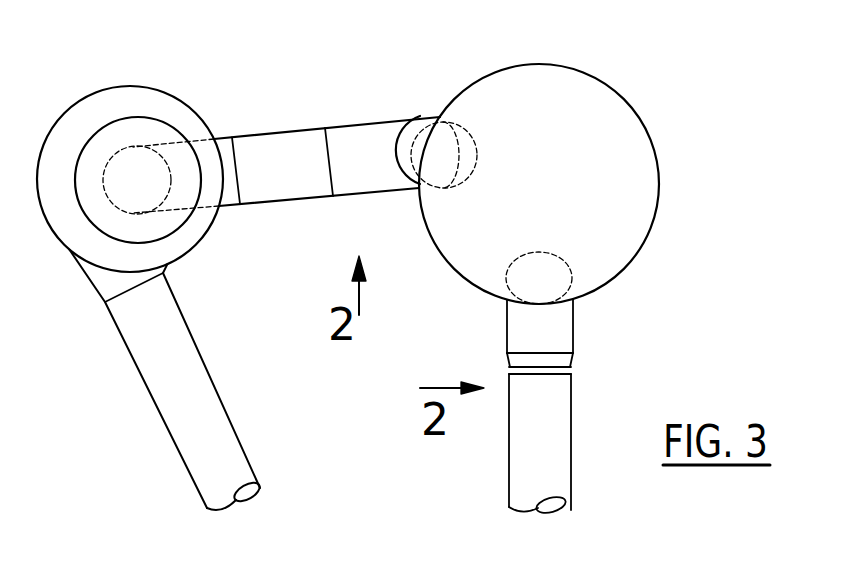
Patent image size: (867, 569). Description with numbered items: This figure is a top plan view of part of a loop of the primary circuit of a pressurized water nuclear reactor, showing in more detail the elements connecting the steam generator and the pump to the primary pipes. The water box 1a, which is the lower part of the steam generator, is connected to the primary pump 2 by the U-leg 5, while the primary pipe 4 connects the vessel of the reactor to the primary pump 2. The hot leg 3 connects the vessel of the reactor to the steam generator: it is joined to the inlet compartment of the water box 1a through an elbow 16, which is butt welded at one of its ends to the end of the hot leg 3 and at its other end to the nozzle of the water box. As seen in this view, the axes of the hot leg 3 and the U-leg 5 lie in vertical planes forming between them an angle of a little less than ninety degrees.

The lower part of the steam generator 1a is at (625, 127).
The primary pump 2 is at (105, 105).
The hot leg 3 is at (550, 445).
The primary pipe 4 is at (210, 420).
The U-leg 5 is at (297, 182).
The elbow 16 is at (557, 322).